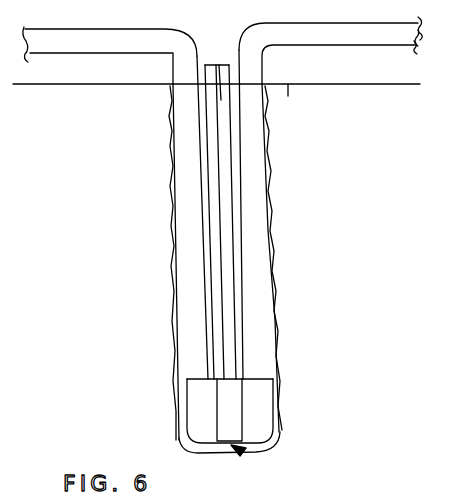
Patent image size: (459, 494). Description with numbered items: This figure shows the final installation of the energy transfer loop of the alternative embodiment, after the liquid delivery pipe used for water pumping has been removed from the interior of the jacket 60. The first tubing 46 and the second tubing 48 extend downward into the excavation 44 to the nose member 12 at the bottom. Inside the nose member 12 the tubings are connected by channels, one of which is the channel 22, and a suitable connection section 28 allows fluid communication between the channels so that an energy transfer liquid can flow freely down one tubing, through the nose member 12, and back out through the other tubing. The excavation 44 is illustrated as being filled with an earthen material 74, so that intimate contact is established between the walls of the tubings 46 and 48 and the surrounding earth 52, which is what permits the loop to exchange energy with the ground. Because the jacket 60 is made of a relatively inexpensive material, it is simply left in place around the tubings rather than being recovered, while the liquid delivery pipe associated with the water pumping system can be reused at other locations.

The nose member 12 is at (262, 405).
The channel 22 is at (258, 415).
The connection section 28 is at (237, 452).
The excavation 44 is at (275, 318).
The first tubing 46 is at (187, 265).
The second tubing 48 is at (256, 252).
The earth 52 is at (342, 133).
The jacket 60 is at (225, 167).
The earthen material 74 is at (270, 182).